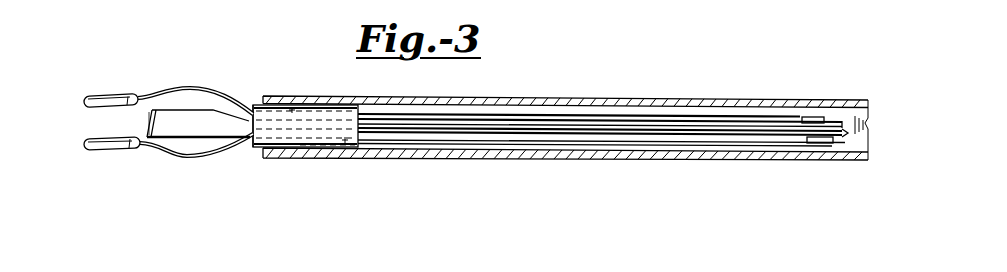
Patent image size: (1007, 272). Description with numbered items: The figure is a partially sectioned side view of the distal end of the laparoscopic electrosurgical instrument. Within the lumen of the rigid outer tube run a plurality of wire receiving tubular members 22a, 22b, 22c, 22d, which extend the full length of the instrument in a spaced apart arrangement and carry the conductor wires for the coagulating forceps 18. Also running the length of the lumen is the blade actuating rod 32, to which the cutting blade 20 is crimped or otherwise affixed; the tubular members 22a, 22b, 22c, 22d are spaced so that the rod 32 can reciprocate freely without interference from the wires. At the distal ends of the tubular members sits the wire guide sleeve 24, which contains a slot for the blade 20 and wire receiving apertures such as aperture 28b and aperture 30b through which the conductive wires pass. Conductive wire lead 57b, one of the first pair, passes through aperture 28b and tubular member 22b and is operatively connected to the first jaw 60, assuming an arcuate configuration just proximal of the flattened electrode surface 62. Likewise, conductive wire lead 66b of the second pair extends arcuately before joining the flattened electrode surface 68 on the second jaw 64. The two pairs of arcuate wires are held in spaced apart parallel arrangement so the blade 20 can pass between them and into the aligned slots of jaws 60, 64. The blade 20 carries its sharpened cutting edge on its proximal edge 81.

The coagulating forceps 18 is at (165, 79).
The cutting blade 20 is at (202, 128).
The wire receiving tubular member 22a is at (809, 117).
The wire receiving tubular member 22b is at (748, 118).
The wire receiving tubular member 22c is at (829, 143).
The wire receiving tubular member 22d is at (748, 144).
The wire guide sleeve 24 is at (253, 147).
The wire receiving aperture 28b is at (293, 111).
The wire receiving aperture 30b is at (345, 141).
The blade actuating rod 32 is at (646, 131).
The conductive wire lead 57b is at (207, 89).
The first jaw 60 is at (111, 95).
The flattened electrode surface 62 is at (94, 108).
The second jaw 64 is at (110, 152).
The conductive wire lead 66b is at (188, 158).
The flattened electrode surface 68 is at (98, 138).
The proximal edge 81 is at (150, 125).